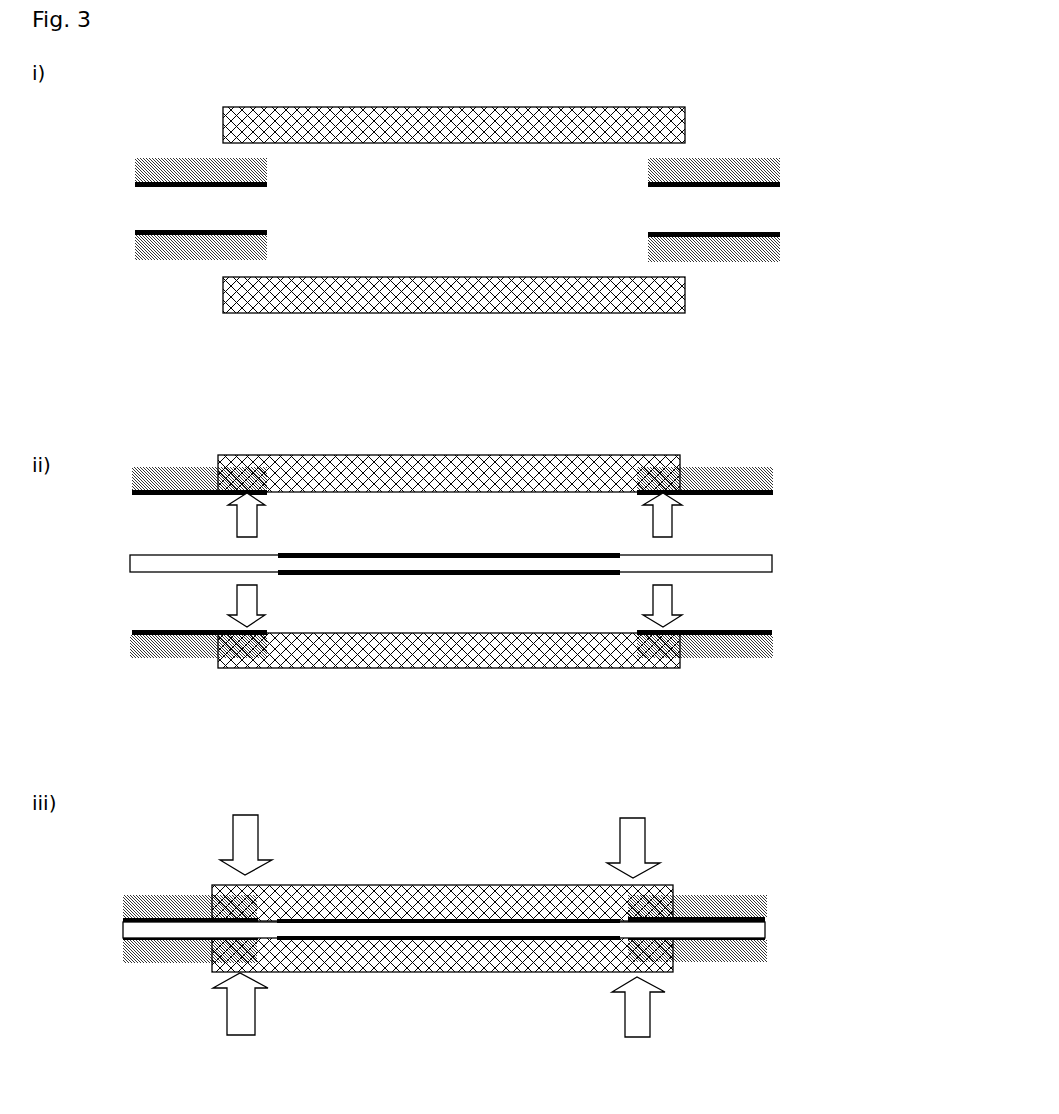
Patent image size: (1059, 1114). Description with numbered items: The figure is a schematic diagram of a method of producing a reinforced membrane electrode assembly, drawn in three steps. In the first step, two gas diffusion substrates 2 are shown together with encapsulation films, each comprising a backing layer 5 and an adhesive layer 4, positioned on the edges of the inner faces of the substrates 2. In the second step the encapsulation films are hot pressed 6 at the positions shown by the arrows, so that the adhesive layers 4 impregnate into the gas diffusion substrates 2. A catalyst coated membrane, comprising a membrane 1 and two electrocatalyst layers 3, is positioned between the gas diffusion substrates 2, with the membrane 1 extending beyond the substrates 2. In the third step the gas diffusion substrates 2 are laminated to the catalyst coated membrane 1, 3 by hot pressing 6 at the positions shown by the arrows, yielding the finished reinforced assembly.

The membrane 1 is at (346, 565).
The gas diffusion substrates 2 is at (488, 118).
The electrocatalyst layers 3 is at (597, 558).
The adhesive layers 4 is at (235, 165).
The backing layers 5 is at (127, 183).
The hot pressing 6 is at (451, 766).